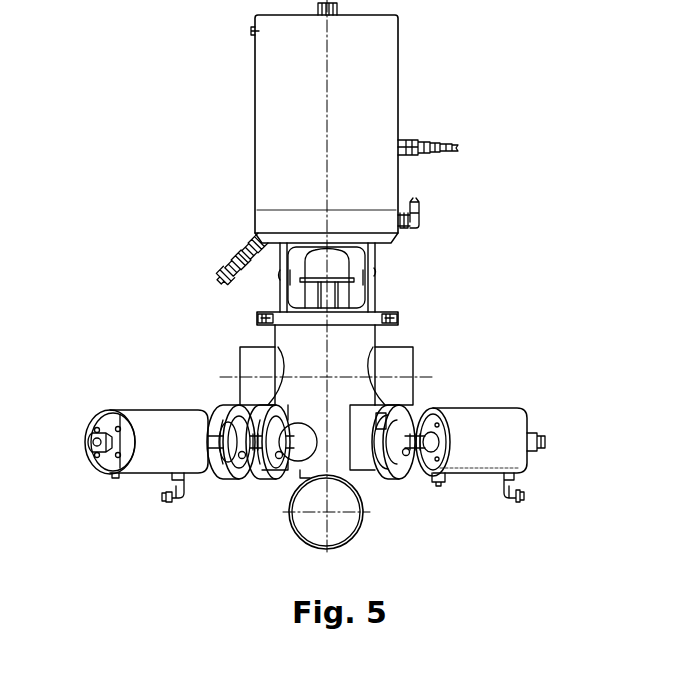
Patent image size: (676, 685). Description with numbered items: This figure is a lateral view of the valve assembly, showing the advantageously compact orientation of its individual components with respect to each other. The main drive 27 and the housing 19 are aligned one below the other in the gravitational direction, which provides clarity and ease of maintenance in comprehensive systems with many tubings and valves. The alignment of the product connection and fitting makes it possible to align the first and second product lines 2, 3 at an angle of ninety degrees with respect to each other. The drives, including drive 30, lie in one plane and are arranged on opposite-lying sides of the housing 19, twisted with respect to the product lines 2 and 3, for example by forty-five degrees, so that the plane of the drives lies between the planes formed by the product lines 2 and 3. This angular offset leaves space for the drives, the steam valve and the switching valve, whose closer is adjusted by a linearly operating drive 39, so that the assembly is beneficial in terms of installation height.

The main drive 27 is at (388, 77).
The housing 19 is at (368, 340).
The first product line 2 is at (253, 358).
The second product line 3 is at (352, 522).
The linearly operating drive 39 is at (143, 468).
The drive 30 is at (462, 460).